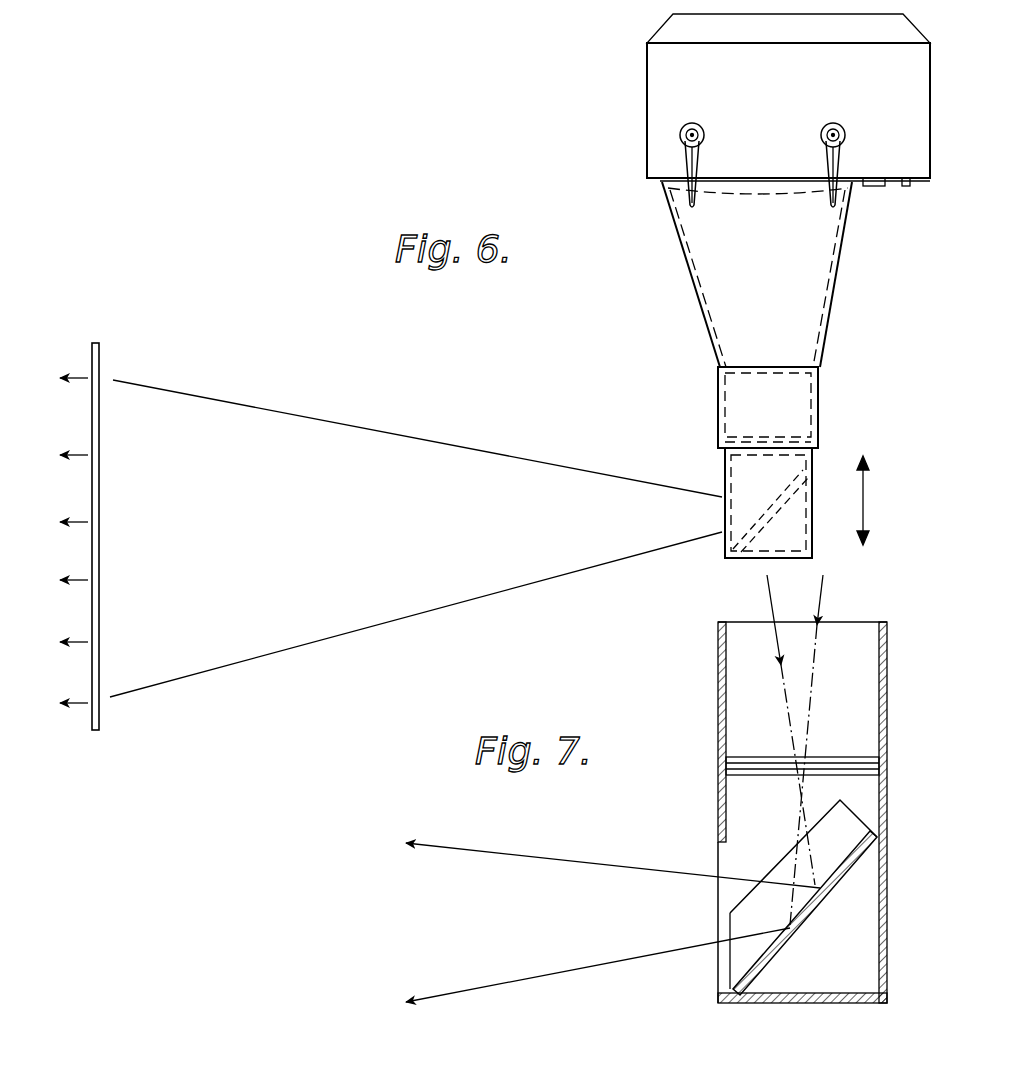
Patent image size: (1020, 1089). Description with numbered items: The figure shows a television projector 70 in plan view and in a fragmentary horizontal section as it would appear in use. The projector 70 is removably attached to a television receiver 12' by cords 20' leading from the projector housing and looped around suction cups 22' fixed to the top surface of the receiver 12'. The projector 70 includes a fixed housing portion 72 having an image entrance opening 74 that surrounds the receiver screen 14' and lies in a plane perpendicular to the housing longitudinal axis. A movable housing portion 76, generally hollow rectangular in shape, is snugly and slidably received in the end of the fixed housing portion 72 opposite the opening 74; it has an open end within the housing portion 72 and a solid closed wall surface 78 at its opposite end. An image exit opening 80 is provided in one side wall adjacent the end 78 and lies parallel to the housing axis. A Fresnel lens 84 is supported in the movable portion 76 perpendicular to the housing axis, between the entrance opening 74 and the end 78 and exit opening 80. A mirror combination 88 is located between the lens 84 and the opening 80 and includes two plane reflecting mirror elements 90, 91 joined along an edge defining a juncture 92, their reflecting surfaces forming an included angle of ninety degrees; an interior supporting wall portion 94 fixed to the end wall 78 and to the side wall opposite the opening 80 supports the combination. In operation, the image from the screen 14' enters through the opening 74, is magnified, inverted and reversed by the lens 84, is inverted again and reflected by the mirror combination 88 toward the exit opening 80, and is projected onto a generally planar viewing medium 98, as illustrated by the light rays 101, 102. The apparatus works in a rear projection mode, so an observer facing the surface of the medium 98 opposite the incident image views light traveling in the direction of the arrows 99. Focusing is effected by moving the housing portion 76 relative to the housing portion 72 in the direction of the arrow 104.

In FIG. 6, the television receiver 12' is at (732, 100).
In FIG. 6, the suction cups 22' is at (775, 138).
In FIG. 6, the cords 20' is at (764, 135).
In FIG. 6, the television receiver screen 14' is at (788, 226).
In FIG. 6, the image entrance opening 74 is at (767, 185).
In FIG. 6, the fixed housing portion 72 is at (688, 333).
In FIG. 6, the television projector 70 is at (850, 402).
In FIG. 6, the lens 84 is at (768, 440).
In FIG. 7, the lens 84 is at (832, 767).
In FIG. 6, the movable housing portion 76 is at (712, 464).
In FIG. 7, the movable housing portion 76 is at (895, 902).
In FIG. 6, the mirror combination 88 is at (782, 476).
In FIG. 7, the mirror combination 88 is at (842, 838).
In FIG. 6, the image exit opening 80 is at (722, 512).
In FIG. 7, the image exit opening 80 is at (720, 862).
In FIG. 6, the closed wall surface 78 is at (735, 558).
In FIG. 7, the closed wall surface 78 is at (880, 1004).
In FIG. 6, the arrow 104 is at (870, 500).
In FIG. 6, the viewing medium 98 is at (100, 553).
In FIG. 6, the arrows 99 is at (85, 515).
In FIG. 6, the light ray 101 is at (160, 380).
In FIG. 7, the light ray 101 is at (765, 600).
In FIG. 6, the light ray 102 is at (140, 702).
In FIG. 7, the light ray 102 is at (826, 598).
In FIG. 7, the plane reflecting mirror element 90 is at (780, 874).
In FIG. 7, the plane reflecting mirror element 91 is at (886, 814).
In FIG. 7, the juncture 92 is at (735, 960).
In FIG. 7, the interior supporting wall portion 94 is at (784, 952).